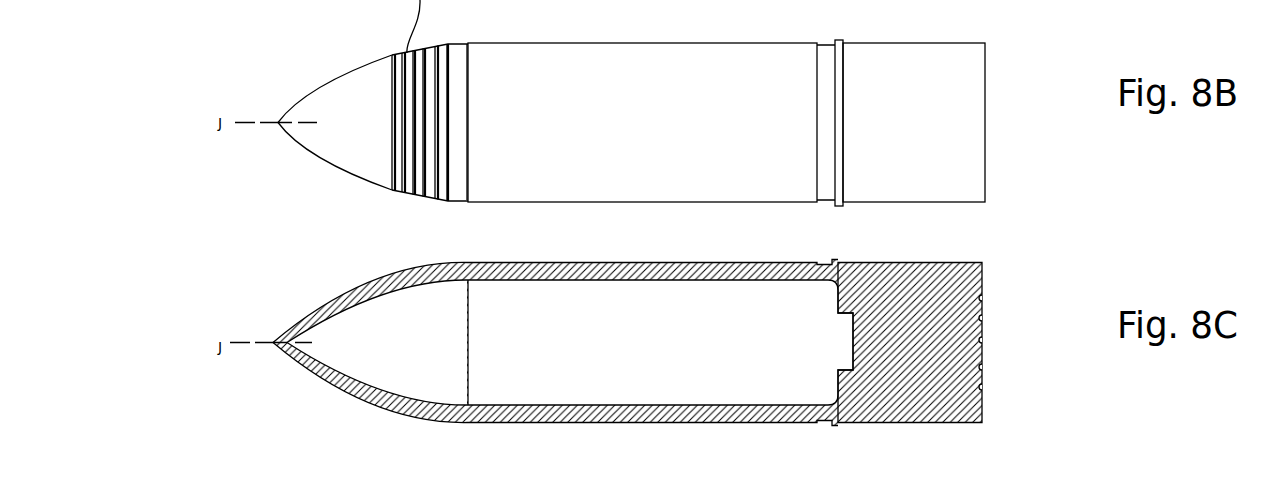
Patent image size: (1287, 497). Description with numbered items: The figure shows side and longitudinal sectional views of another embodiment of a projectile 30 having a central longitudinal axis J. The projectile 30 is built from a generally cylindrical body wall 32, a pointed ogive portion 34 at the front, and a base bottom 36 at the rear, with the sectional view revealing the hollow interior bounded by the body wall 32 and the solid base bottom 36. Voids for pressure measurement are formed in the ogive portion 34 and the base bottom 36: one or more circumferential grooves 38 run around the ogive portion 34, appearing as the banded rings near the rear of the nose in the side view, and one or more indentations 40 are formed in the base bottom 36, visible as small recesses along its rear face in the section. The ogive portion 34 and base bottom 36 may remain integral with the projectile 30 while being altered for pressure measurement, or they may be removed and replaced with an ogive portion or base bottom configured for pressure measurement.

In FIG. 8C, the projectile 30 is at (622, 438).
In FIG. 8B, the body wall 32 is at (628, 60).
In FIG. 8C, the body wall 32 is at (640, 263).
In FIG. 8B, the ogive portion 34 is at (362, 78).
In FIG. 8C, the ogive portion 34 is at (292, 430).
In FIG. 8B, the base bottom 36 is at (985, 70).
In FIG. 8C, the base bottom 36 is at (982, 275).
In FIG. 8C, the circumferential grooves 38 is at (420, 266).
In FIG. 8C, the indentations 40 is at (972, 300).